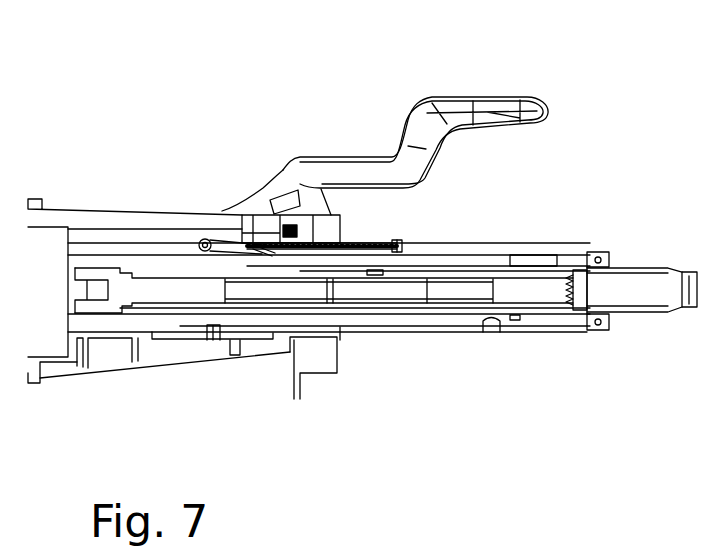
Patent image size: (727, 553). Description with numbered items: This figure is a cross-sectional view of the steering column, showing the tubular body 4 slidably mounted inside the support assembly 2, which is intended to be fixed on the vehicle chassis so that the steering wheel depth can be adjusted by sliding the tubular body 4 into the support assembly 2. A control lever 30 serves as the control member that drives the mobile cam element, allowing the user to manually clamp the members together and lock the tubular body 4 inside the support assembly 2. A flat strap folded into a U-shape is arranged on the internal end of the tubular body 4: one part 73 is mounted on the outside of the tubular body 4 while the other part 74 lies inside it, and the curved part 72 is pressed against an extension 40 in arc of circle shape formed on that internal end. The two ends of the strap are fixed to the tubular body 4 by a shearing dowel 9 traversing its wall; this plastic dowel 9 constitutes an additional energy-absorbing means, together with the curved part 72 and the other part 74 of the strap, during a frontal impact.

The support assembly 2 is at (150, 155).
The tubular body 4 is at (601, 235).
The shearing dowel 9 is at (407, 243).
The control lever 30 is at (538, 82).
The extension 40 is at (200, 252).
The curved part 72 is at (198, 250).
The part 73 is at (388, 247).
The other part 74 is at (212, 258).